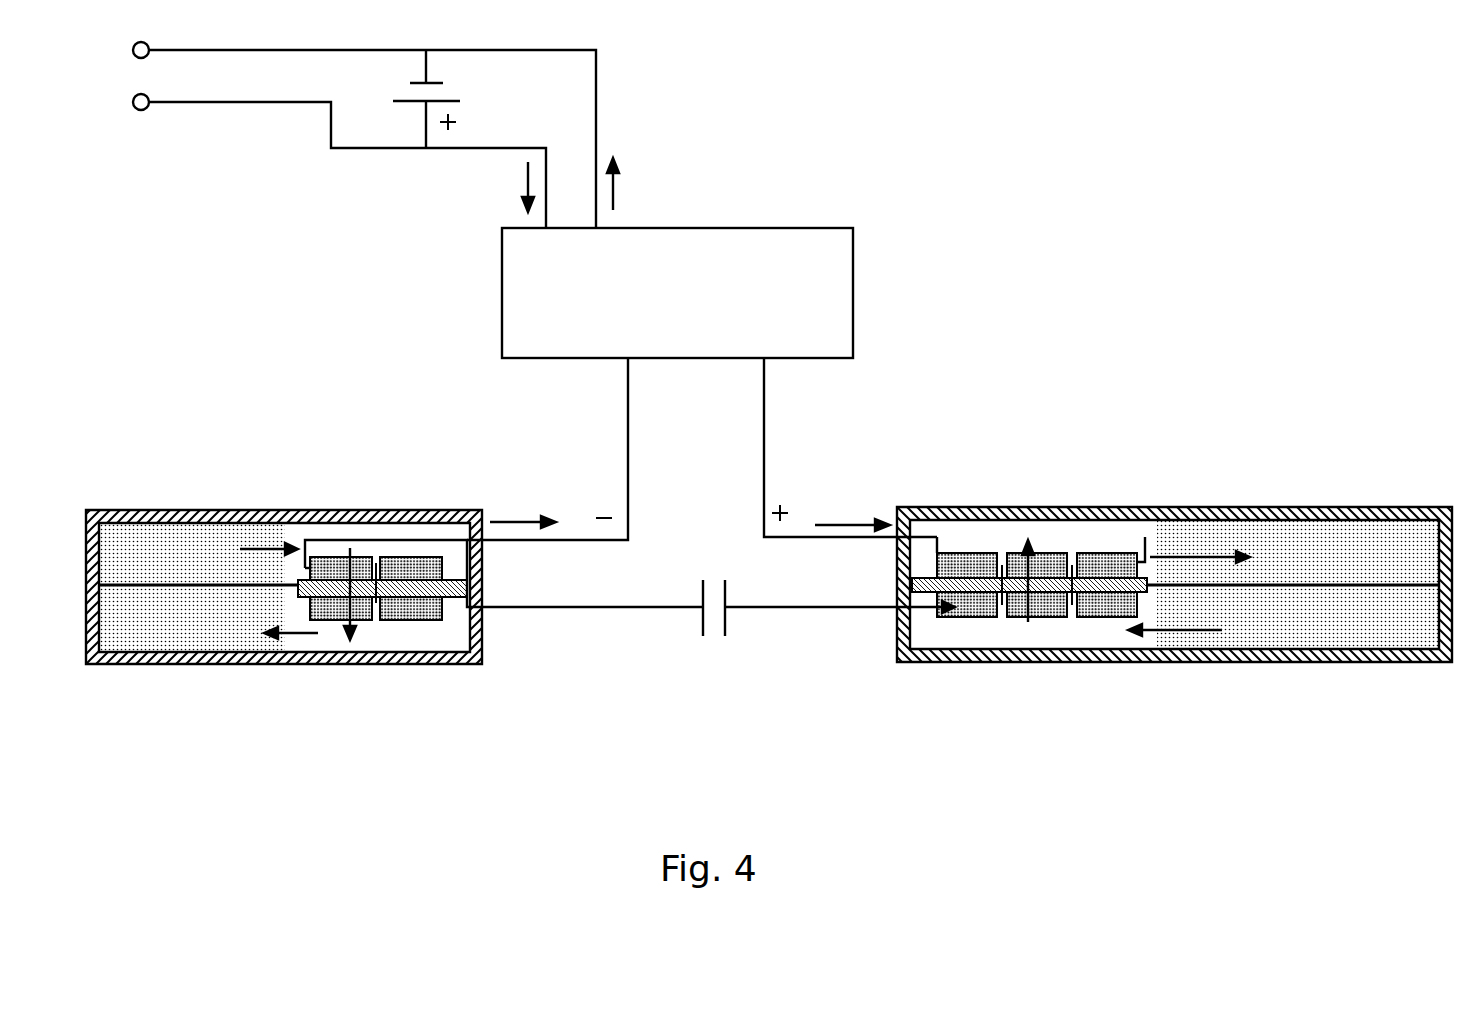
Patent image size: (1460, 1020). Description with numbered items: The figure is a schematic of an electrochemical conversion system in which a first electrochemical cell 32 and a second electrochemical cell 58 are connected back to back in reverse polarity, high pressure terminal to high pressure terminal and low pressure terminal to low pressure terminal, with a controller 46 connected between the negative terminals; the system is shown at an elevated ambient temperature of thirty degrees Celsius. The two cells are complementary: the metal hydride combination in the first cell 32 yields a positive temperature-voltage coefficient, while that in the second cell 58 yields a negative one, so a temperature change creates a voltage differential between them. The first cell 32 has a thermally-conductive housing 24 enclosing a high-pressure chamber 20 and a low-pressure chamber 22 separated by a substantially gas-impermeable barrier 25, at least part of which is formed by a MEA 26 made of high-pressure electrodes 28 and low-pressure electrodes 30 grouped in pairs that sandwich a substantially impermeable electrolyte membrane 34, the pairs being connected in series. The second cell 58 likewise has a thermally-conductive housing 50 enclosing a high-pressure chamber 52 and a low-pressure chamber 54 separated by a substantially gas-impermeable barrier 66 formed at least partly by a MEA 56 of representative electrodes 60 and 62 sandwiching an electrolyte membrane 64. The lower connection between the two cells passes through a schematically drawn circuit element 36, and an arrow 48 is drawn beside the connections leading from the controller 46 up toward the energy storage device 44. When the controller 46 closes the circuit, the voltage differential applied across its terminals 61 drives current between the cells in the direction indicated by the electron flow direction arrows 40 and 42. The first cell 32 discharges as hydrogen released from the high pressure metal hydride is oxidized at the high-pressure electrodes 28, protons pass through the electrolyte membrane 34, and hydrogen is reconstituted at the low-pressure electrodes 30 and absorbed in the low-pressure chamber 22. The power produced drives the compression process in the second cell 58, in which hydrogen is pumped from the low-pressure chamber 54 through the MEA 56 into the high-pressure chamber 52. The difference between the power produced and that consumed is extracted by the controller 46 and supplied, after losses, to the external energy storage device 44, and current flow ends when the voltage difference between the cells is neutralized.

The high-pressure chamber 20 is at (118, 540).
The low-pressure chamber 22 is at (118, 645).
The thermally-conductive housing 24 is at (222, 523).
The substantially gas-impermeable barrier 25 is at (262, 525).
The MEA 26 is at (336, 558).
The high-pressure electrodes 28 is at (454, 558).
The low-pressure electrodes 30 is at (416, 626).
The first electrochemical cell 32 is at (482, 625).
The electrolyte membrane 34 is at (478, 568).
The capacitor 36 is at (703, 622).
The electron flow direction arrow 40 is at (510, 520).
The electron flow direction arrow 42 is at (850, 525).
The energy storage device 44 is at (417, 104).
The controller 46 is at (502, 318).
The power signal 48 is at (628, 195).
The thermally-conductive housing 50 is at (1036, 520).
The high-pressure chamber 52 is at (1408, 548).
The low-pressure chamber 54 is at (1405, 640).
The MEA 56 is at (1052, 628).
The second electrochemical cell 58 is at (933, 662).
The electrodes 60 is at (992, 622).
The terminals 61 is at (628, 400).
The electrodes 62 is at (934, 556).
The electrolyte membrane 64 is at (897, 607).
The substantially gas-impermeable barrier 66 is at (1150, 586).